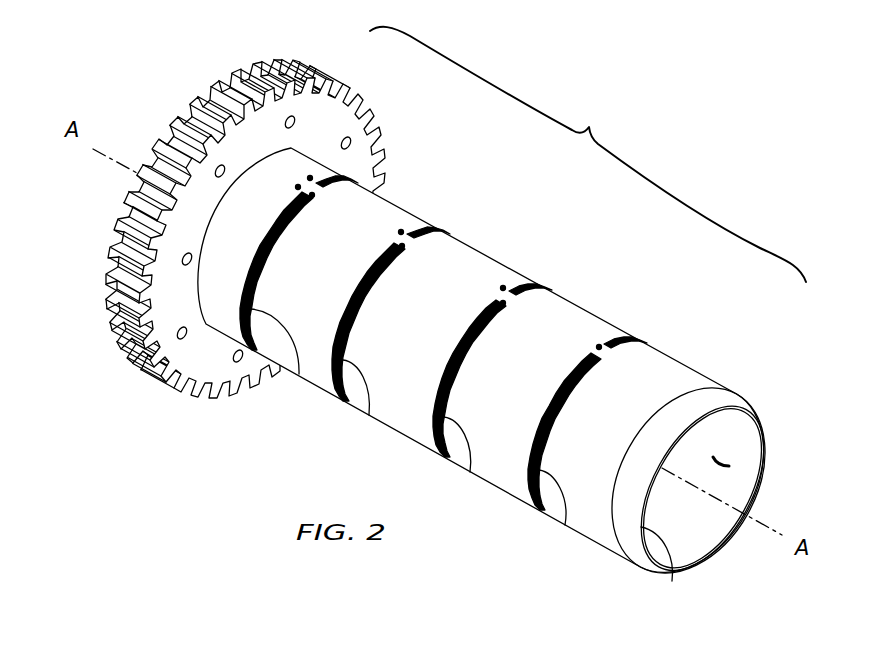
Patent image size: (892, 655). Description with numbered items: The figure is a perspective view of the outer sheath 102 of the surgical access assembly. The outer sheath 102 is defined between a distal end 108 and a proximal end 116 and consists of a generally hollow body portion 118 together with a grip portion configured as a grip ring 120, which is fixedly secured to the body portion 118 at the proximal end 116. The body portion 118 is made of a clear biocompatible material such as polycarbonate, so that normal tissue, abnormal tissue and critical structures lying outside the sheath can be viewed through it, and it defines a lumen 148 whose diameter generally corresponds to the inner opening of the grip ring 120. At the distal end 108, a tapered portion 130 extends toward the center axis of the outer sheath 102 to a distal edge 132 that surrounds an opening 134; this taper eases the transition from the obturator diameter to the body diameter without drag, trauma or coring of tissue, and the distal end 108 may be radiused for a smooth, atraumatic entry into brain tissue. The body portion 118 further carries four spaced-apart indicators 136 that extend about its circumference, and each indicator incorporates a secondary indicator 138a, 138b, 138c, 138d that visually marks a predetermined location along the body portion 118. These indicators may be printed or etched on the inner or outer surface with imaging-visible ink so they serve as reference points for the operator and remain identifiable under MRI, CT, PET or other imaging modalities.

The outer sheath 102 is at (588, 154).
The distal end 108 is at (762, 413).
The proximal end 116 is at (106, 206).
The body portion 118 is at (481, 272).
The grip ring 120 is at (262, 128).
The tapered portion 130 is at (703, 400).
The distal edge 132 is at (672, 581).
The opening 134 is at (741, 490).
The indicators 136 is at (299, 374).
The secondary indicator 138a is at (605, 352).
The secondary indicator 138b is at (507, 303).
The secondary indicator 138c is at (412, 246).
The secondary indicator 138d is at (322, 188).
The lumen 148 is at (714, 458).